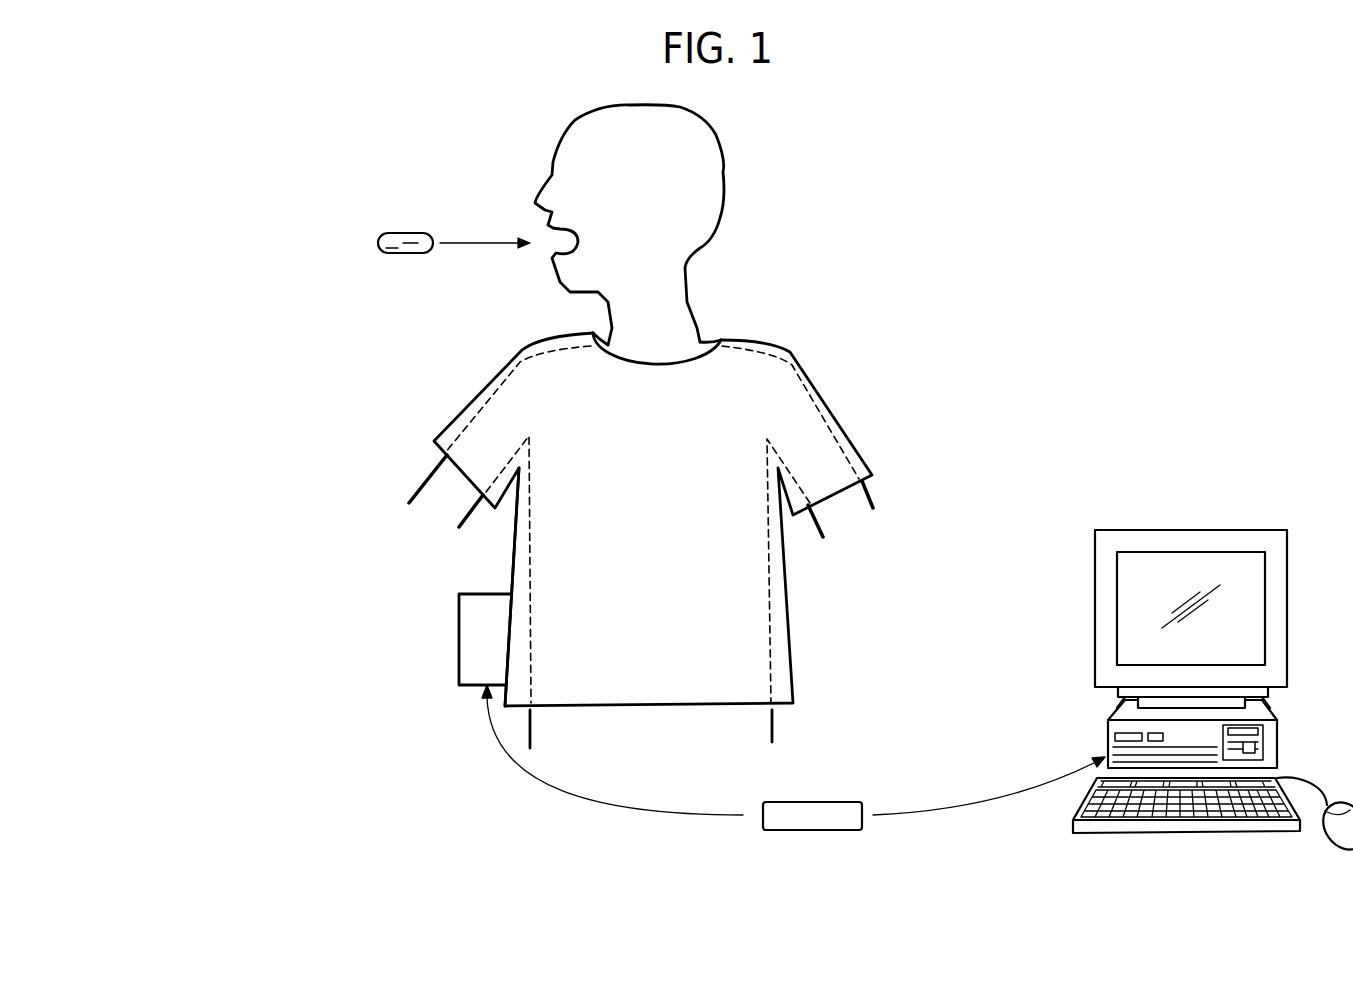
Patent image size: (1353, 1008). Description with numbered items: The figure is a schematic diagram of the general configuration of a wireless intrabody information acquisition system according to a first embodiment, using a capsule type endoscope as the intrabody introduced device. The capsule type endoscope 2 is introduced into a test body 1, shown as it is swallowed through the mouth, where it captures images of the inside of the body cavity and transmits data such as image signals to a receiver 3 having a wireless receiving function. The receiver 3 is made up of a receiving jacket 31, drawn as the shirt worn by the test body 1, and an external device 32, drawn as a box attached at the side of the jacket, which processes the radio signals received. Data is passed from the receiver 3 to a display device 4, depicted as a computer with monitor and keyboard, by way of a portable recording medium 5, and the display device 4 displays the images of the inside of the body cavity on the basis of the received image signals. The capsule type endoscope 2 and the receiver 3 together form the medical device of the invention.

The test body 1 is at (720, 148).
The capsule type endoscope 2 is at (397, 255).
The receiver 3 is at (256, 553).
The receiving jacket 31 is at (514, 572).
The external device 32 is at (458, 623).
The display device 4 is at (1132, 529).
The portable recording medium 5 is at (803, 830).